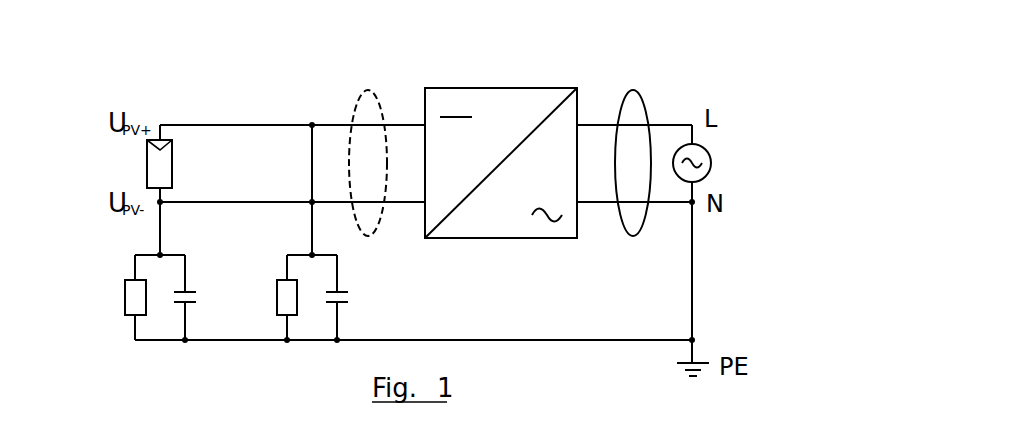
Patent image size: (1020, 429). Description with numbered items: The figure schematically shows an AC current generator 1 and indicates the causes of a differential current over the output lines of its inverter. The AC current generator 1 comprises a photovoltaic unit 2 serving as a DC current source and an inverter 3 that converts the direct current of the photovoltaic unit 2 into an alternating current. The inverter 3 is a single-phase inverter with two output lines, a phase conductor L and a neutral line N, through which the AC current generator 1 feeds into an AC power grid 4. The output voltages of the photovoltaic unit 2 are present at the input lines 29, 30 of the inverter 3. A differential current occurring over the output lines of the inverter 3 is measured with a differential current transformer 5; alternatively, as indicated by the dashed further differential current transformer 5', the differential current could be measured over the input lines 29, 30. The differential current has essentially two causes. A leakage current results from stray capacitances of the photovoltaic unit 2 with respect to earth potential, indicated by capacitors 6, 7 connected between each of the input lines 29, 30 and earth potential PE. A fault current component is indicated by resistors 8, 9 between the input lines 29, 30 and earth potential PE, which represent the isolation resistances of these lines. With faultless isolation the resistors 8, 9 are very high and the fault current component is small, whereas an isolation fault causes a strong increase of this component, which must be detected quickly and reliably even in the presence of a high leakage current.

The AC current generator 1 is at (157, 75).
The photovoltaic unit 2 is at (128, 160).
The inverter 3 is at (503, 240).
The AC power grid 4 is at (708, 153).
The differential current transformer 5 is at (647, 138).
The further differential current transformer 5' is at (363, 130).
The capacitor 6 is at (192, 290).
The capacitor 7 is at (343, 293).
The resistor 8 is at (125, 297).
The resistor 9 is at (277, 297).
The input line 29 is at (203, 123).
The input line 30 is at (219, 204).